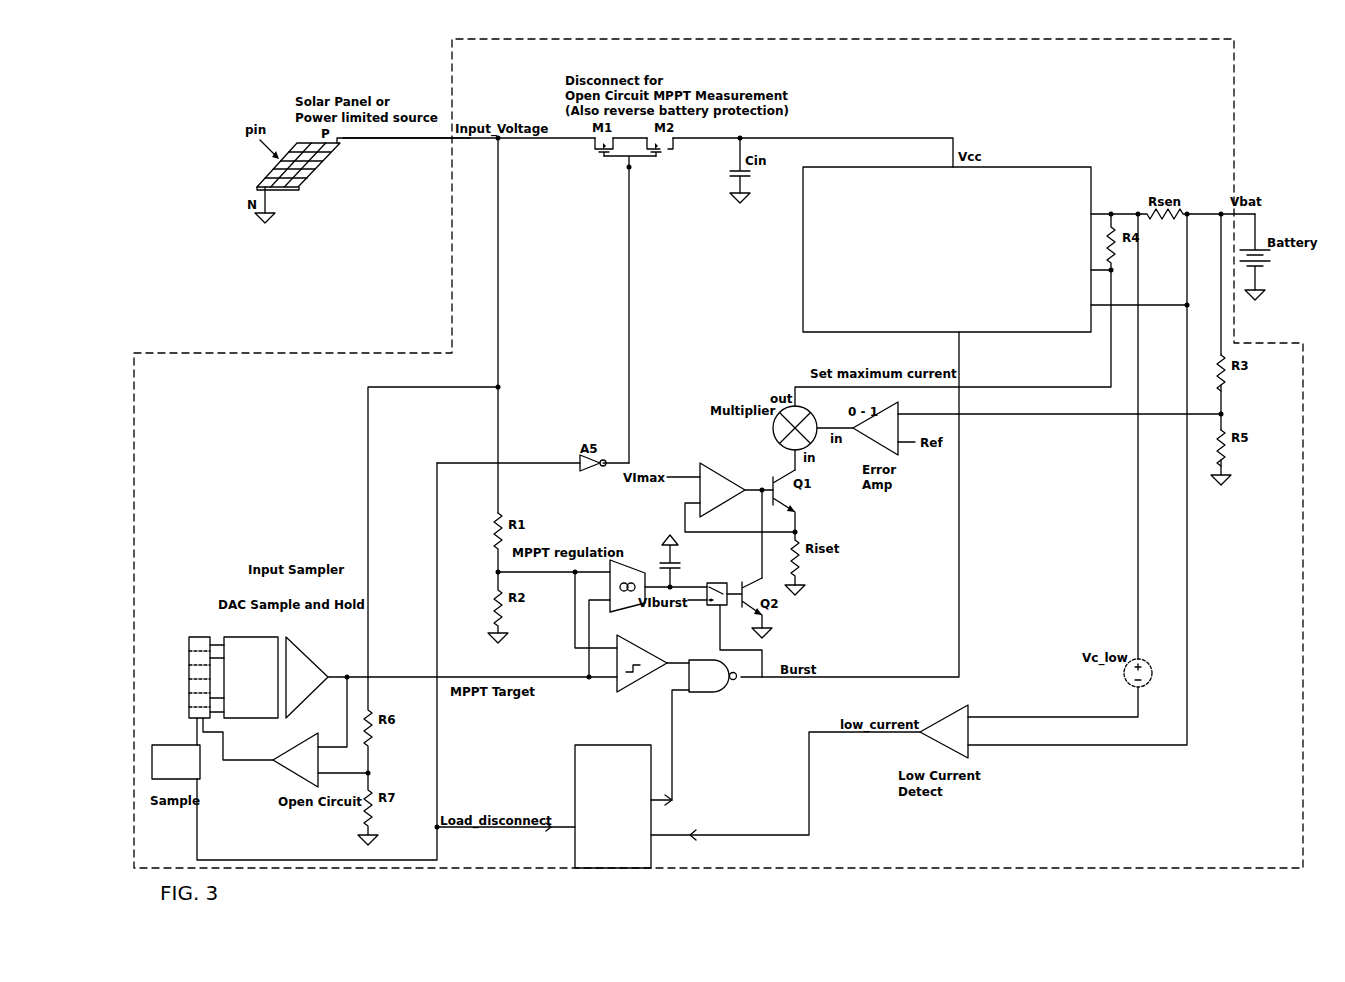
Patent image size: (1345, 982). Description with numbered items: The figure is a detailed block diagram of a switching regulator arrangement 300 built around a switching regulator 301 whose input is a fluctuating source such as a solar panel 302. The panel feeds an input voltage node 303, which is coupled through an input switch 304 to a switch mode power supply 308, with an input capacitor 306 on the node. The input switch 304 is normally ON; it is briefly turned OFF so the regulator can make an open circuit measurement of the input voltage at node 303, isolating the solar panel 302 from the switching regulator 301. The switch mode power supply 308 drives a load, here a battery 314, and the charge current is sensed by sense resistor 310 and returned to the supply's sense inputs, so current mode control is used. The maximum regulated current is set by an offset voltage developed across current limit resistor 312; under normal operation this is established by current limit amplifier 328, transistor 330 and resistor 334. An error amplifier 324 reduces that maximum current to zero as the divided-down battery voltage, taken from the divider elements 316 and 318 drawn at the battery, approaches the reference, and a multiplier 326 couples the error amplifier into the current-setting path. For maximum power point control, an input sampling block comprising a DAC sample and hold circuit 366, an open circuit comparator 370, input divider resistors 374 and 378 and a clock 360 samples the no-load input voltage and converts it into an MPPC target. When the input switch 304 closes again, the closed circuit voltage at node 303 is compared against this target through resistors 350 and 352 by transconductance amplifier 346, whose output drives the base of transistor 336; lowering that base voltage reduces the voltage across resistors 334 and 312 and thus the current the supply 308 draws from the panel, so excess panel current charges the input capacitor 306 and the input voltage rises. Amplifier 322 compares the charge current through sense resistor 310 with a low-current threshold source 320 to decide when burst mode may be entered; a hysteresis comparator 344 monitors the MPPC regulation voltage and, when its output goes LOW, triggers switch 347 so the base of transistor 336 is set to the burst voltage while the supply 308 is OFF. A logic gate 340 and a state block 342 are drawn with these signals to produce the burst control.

The solar battery charger system 300 is at (255, 95).
The switching regulator 301 is at (1147, 42).
The solar panel 302 is at (280, 160).
The input voltage node 303 is at (432, 143).
The input switch 304 is at (615, 158).
The input capacitor 306 is at (735, 171).
The switch mode power supply 308 is at (1032, 167).
The sense resistor 310 is at (1162, 198).
The current limit resistor 312 is at (1118, 256).
The battery 314 is at (1273, 256).
The resistor R3 316 is at (1234, 379).
The resistor R5 318 is at (1234, 445).
The low current threshold source Vc_low 320 is at (1092, 662).
The amplifier A4 322 is at (967, 705).
The error amplifier A6 324 is at (899, 442).
The multiplier 326 is at (780, 405).
The current limit amplifier A3 328 is at (731, 472).
The transistor Q1 330 is at (814, 501).
The resistor RIset 334 is at (806, 556).
The transistor Q2 336 is at (770, 604).
The NAND gate X1 340 is at (703, 696).
The state machine 342 is at (575, 795).
The hysteresis comparator A2 344 is at (646, 676).
The transconductance amplifier G1 346 is at (641, 562).
The switch 347 is at (716, 589).
The resistor R1 350 is at (494, 524).
The resistor R2 352 is at (494, 606).
The clock 360 is at (165, 745).
The DAC sample and hold circuit 366 is at (260, 634).
The open circuit amplifier 370 is at (292, 758).
The resistor R6 374 is at (380, 740).
The resistor R7 378 is at (383, 806).